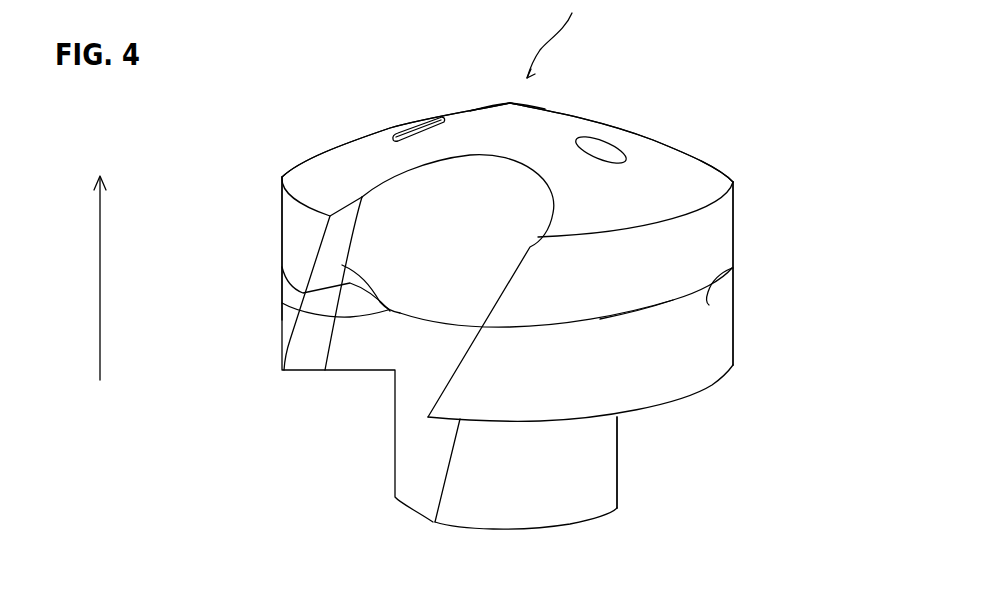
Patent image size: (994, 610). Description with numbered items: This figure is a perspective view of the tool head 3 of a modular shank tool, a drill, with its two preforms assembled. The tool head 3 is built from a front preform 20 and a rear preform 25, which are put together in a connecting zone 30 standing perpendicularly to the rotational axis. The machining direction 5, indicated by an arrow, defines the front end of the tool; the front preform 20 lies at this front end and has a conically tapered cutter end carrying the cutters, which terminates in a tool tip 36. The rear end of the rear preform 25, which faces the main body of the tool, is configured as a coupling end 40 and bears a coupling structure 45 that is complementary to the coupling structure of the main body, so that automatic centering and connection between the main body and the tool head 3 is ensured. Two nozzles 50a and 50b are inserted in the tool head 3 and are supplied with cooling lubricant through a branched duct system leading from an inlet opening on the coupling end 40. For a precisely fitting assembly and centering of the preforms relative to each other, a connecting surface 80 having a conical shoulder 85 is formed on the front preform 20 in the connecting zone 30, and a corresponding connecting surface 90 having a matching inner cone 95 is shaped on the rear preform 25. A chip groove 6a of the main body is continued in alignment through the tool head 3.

The tool head 3 is at (708, 100).
The machining direction 5 is at (100, 266).
The chip groove 6a is at (363, 345).
The front preform 20 is at (733, 208).
The rear preform 25 is at (735, 363).
The connecting zone 30 is at (709, 305).
The tool tip 36 is at (508, 106).
The coupling end 40 is at (625, 527).
The coupling structure 45 is at (617, 452).
The nozzle 50a is at (414, 123).
The nozzle 50b is at (603, 148).
The connecting surface 80 is at (733, 268).
The conical shoulder 85 is at (342, 265).
The connecting surface 90 is at (657, 313).
The inner cone 95 is at (282, 303).